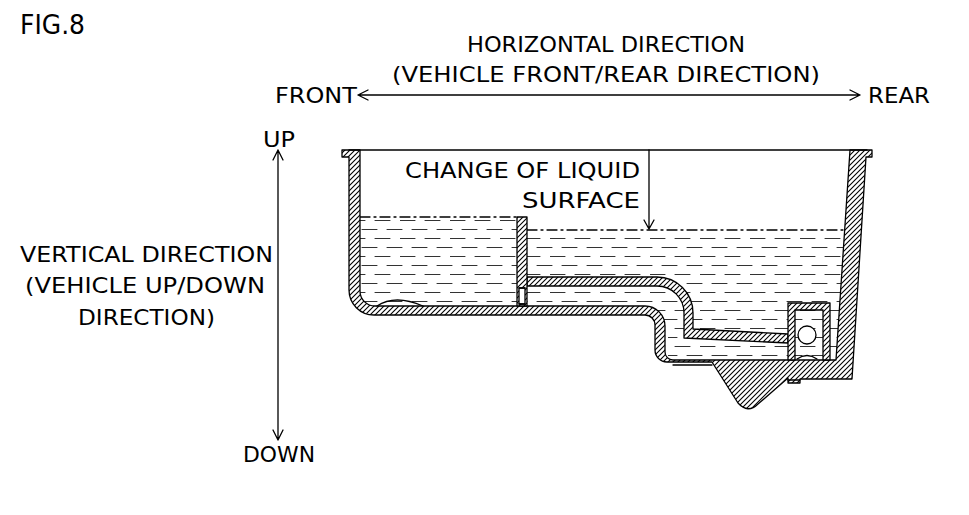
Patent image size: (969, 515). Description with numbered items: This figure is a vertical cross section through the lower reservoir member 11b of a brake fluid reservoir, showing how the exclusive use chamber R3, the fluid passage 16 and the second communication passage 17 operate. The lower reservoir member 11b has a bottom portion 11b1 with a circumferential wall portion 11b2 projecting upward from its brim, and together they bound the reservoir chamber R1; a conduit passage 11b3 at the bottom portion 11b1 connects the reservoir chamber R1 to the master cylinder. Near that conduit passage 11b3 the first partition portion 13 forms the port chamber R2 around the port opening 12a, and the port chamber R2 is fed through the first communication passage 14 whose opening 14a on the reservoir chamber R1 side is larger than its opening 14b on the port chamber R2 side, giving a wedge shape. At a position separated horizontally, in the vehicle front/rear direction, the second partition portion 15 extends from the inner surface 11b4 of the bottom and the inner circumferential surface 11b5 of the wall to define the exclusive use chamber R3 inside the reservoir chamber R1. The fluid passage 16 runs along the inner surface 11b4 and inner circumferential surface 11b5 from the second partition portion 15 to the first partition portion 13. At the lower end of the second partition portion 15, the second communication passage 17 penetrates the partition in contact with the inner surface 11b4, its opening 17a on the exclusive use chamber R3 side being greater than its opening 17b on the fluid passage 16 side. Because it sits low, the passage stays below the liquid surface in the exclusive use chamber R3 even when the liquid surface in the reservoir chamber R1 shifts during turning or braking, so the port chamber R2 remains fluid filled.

The lower reservoir member 11b is at (834, 468).
The bottom portion 11b1 is at (403, 316).
The circumferential wall portion 11b2 is at (349, 217).
The conduit passage 11b3 is at (688, 368).
The inner surface 11b4 is at (364, 308).
The inner circumferential surface 11b5 is at (357, 258).
The suction port 12a is at (815, 334).
The first partition portion 13 is at (806, 303).
The first communication passage 14 is at (801, 381).
The opening 14a is at (801, 381).
The opening 14b is at (834, 366).
The second partition portion 15 is at (518, 215).
The fluid passage 16 is at (590, 286).
The second communication passage 17 is at (521, 316).
The opening 17a is at (517, 284).
The opening 17b is at (527, 310).
The reservoir chamber R1 is at (737, 205).
The port chamber R2 is at (819, 352).
The exclusive use chamber R3 is at (448, 270).